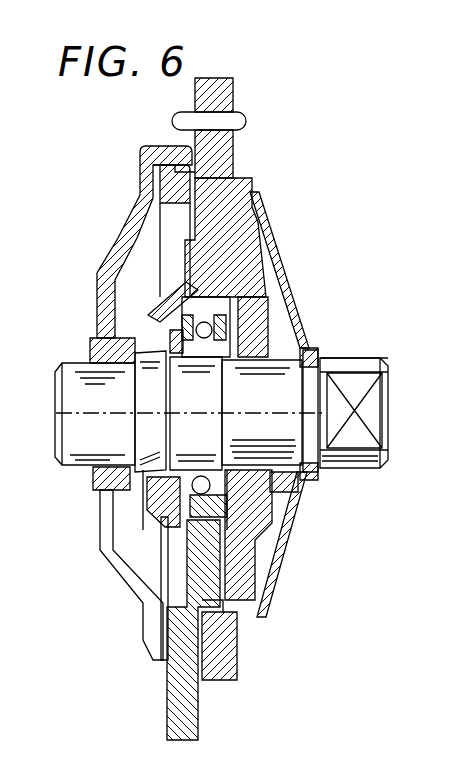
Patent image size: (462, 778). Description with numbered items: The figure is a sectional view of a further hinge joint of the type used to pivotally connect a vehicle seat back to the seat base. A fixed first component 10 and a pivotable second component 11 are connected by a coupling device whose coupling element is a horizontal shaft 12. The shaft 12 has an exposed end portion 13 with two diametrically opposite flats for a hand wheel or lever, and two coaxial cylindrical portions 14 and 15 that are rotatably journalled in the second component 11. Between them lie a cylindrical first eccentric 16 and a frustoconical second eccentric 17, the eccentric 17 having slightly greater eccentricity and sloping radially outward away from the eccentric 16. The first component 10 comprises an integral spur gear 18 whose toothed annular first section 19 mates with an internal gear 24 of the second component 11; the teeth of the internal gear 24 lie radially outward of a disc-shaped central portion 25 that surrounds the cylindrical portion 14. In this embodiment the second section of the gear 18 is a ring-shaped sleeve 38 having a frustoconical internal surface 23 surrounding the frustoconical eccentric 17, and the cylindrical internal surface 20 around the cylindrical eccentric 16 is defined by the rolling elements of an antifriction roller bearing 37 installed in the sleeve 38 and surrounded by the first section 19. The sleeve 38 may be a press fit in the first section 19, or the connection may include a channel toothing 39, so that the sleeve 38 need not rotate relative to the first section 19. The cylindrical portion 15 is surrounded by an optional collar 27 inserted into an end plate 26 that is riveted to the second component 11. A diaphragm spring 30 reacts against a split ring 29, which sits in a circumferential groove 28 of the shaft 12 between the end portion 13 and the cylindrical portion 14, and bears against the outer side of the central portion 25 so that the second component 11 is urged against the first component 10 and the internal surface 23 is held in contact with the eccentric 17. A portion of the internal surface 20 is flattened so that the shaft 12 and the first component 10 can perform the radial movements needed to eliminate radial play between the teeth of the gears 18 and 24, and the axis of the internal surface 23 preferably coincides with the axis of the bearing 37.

The first component 10 is at (178, 720).
The second component 11 is at (231, 88).
The shaft 12 is at (409, 391).
The end portion 13 is at (367, 463).
The cylindrical portion 14 is at (276, 398).
The cylindrical portion 15 is at (106, 450).
The first eccentric 16 is at (210, 450).
The second eccentric 17 is at (164, 392).
The spur gear 18 is at (226, 603).
The first section 19 is at (255, 238).
The internal surface 20 is at (268, 481).
The internal surface 23 is at (100, 520).
The internal gear 24 is at (212, 633).
The central portion 25 is at (244, 548).
The end plate 26 is at (100, 266).
The collar 27 is at (92, 346).
The circumferential groove 28 is at (340, 357).
The split ring 29 is at (318, 353).
The diaphragm spring 30 is at (280, 270).
The antifriction roller bearing 37 is at (293, 302).
The ring-shaped sleeve 38 is at (167, 514).
The channel toothing 39 is at (137, 562).